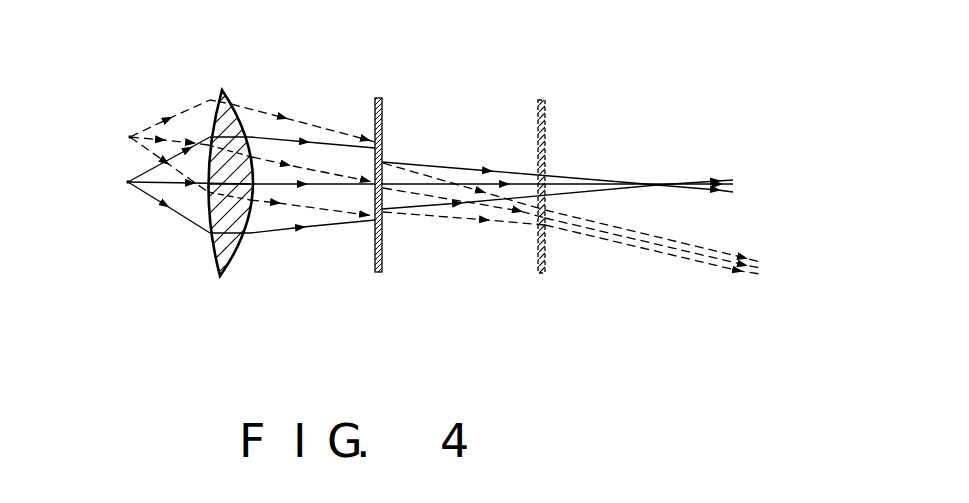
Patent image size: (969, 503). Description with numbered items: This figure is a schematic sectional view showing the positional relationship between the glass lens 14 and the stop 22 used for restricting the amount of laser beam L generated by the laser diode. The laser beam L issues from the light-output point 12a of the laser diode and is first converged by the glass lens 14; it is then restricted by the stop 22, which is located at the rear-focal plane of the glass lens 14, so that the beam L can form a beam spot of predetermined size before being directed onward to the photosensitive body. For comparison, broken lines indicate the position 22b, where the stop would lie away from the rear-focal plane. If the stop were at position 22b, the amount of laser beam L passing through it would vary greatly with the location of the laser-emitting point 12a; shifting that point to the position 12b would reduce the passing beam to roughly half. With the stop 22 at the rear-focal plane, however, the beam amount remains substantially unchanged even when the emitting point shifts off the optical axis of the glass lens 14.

The light-output point 12a is at (128, 183).
The shifted position of the laser-emitting point 12b is at (130, 137).
The glass lens 14 is at (216, 278).
The stop 22 is at (378, 97).
The position of the stop away from the rear-focal plane 22b is at (543, 99).
The laser beam L is at (323, 168).